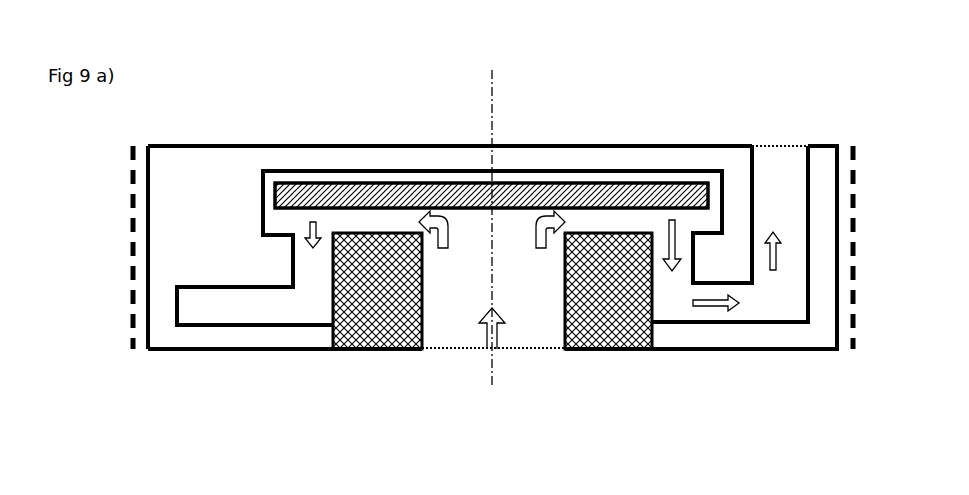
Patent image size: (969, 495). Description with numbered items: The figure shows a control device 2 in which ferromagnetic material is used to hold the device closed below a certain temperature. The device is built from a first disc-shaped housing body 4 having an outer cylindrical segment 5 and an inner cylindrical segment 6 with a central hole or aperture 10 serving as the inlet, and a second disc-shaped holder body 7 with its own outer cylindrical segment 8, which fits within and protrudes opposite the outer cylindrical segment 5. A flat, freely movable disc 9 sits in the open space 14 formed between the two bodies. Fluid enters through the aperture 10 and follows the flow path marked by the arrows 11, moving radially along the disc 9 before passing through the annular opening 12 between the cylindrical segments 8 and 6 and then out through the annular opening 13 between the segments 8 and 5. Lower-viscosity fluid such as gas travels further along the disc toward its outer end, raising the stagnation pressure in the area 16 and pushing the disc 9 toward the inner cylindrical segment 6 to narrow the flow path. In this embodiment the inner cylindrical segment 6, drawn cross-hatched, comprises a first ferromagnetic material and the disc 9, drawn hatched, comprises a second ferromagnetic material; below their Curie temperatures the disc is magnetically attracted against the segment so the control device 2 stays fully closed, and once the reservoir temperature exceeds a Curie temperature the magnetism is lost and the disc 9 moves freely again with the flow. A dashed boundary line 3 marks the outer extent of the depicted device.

The control device 2 is at (247, 366).
The housing wall boundary 3 is at (843, 150).
The first disc-shaped housing body 4 is at (777, 330).
The outer cylindrical segment 5 is at (820, 227).
The inner cylindrical segment 6 is at (612, 323).
The second disc-shaped holder body 7 is at (342, 166).
The outer cylindrical segment 8 is at (710, 218).
The disc 9 is at (463, 192).
The central hole or aperture 10 is at (453, 273).
The arrows 11 is at (497, 352).
The annular opening 12 is at (671, 280).
The annular opening 13 is at (740, 198).
The open space 14 is at (262, 182).
The area 16 is at (660, 185).